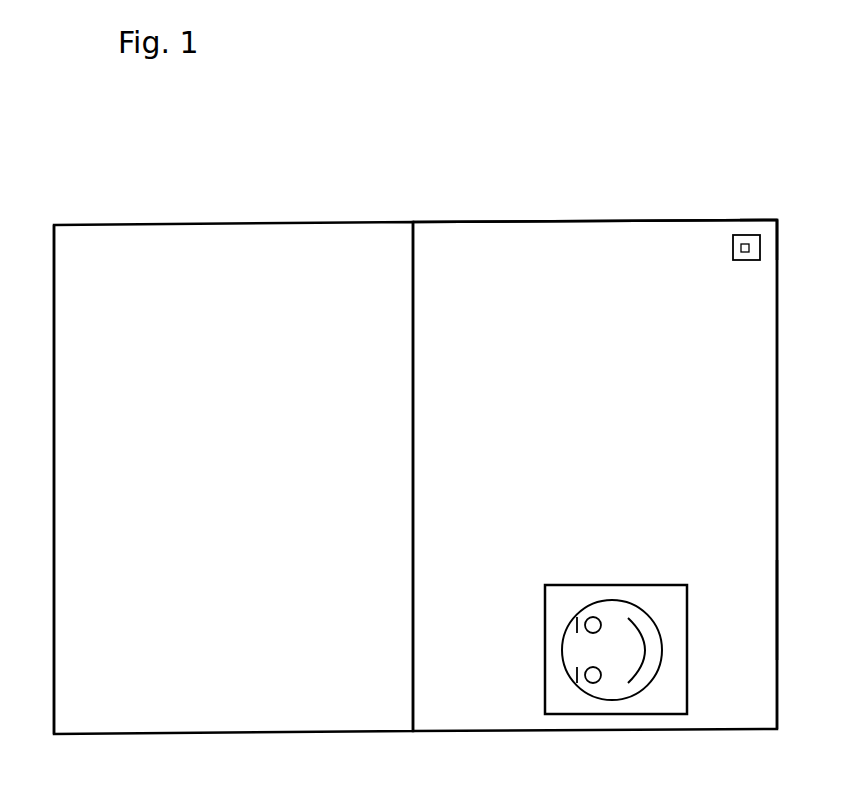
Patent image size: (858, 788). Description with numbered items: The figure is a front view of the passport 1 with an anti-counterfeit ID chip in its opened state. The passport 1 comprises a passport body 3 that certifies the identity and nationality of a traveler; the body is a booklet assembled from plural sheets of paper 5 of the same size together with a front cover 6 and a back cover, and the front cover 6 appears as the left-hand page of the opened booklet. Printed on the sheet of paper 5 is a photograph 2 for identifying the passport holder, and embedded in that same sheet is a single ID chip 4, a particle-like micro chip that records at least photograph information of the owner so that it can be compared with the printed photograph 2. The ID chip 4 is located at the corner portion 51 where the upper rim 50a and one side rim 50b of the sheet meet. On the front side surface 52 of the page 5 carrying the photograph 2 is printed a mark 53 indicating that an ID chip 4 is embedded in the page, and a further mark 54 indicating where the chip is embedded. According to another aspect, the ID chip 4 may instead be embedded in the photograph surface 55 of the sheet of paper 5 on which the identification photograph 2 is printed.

The passport 1 is at (654, 155).
The photograph 2 is at (581, 714).
The passport body 3 is at (208, 222).
The ID chip 4 is at (762, 247).
The sheet of paper 5 is at (760, 390).
The front cover 6 is at (72, 597).
The upper rim 50a is at (540, 220).
The side rim 50b is at (777, 478).
The corner portion 51 is at (766, 225).
The front side surface 52 is at (728, 605).
The mark 53 is at (746, 284).
The mark 54 is at (745, 235).
The photograph surface 55 is at (644, 700).